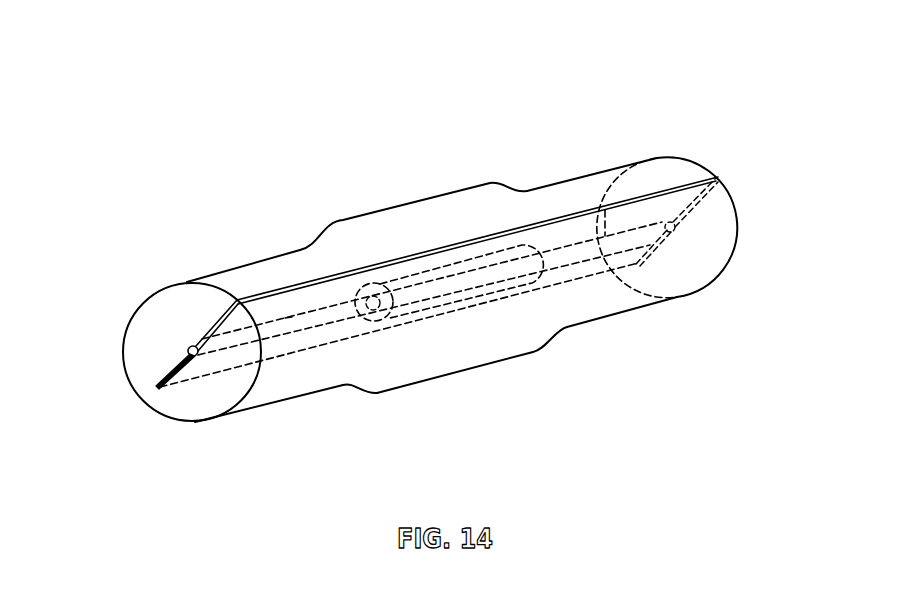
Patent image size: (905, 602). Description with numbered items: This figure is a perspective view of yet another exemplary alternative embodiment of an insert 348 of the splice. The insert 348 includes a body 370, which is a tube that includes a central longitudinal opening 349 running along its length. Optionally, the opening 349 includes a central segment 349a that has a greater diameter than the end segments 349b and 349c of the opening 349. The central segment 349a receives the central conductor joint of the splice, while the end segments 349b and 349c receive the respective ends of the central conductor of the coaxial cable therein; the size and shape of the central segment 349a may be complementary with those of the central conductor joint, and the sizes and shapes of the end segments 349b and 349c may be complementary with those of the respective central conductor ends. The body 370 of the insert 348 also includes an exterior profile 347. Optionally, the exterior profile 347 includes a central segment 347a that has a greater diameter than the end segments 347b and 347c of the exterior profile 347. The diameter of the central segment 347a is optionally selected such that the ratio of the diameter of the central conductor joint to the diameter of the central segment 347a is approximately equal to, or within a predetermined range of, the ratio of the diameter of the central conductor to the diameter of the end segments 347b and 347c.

The exterior profile 347 is at (430, 283).
The central segment of the exterior profile 347a is at (390, 203).
The end segment of the exterior profile 347b is at (295, 402).
The end segment of the exterior profile 347c is at (619, 160).
The insert 348 is at (446, 245).
The central longitudinal opening 349 is at (378, 318).
The central segment of the opening 349a is at (417, 318).
The end segment of the opening 349b is at (285, 318).
The end segment of the opening 349c is at (594, 273).
The body 370 is at (565, 180).